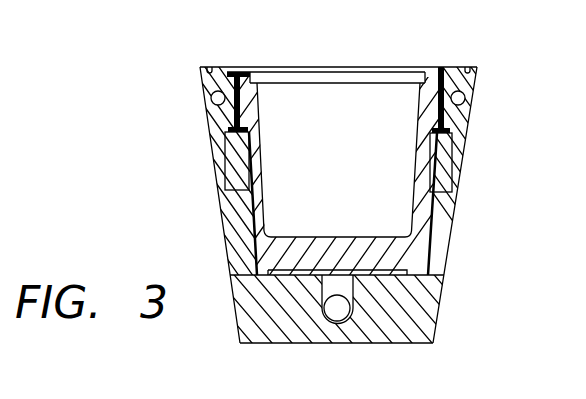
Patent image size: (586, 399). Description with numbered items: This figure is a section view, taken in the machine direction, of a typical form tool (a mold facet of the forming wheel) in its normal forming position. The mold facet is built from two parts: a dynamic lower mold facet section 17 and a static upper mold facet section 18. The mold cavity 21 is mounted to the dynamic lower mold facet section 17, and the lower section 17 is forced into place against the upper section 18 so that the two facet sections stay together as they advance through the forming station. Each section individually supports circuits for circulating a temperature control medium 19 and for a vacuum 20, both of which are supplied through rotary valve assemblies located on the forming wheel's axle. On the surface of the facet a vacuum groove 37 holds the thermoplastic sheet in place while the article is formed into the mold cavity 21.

The dynamic lower mold facet section 17 is at (442, 290).
The static upper mold facet section 18 is at (470, 115).
The temperature control medium circuit 19 is at (493, 222).
The vacuum circuit 20 is at (363, 357).
The mold cavity 21 is at (298, 70).
The vacuum groove 37 is at (208, 65).